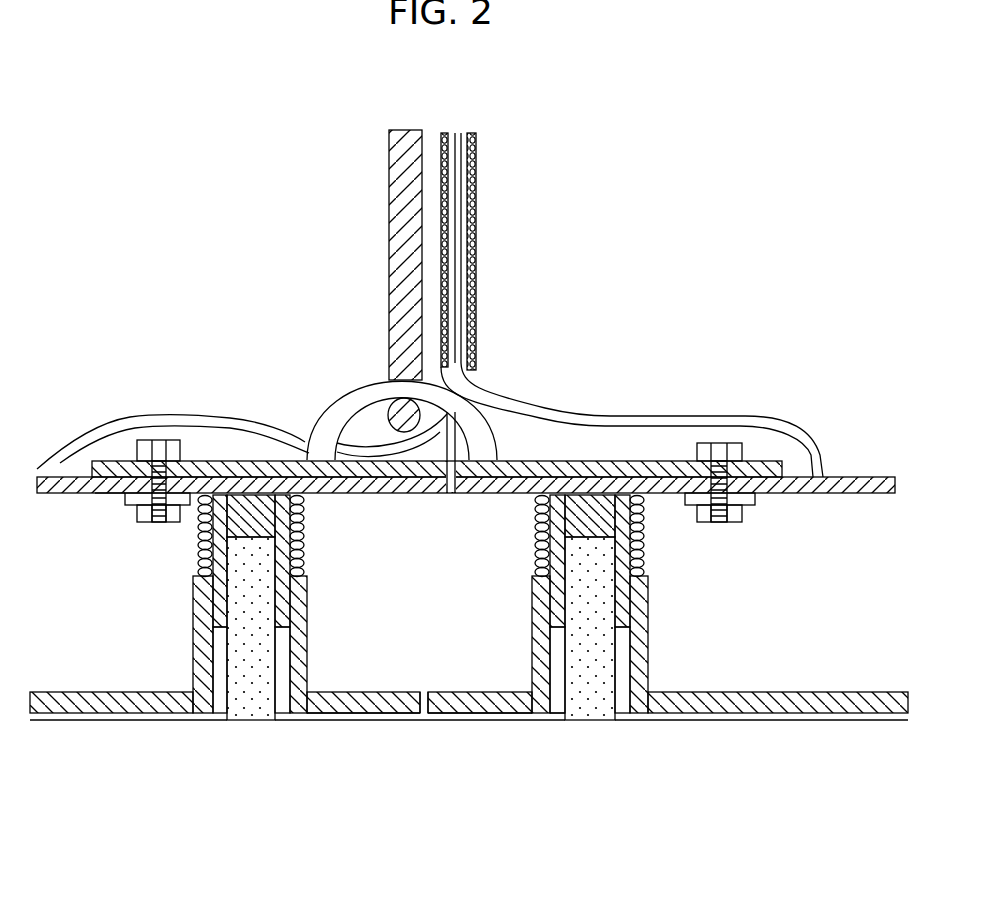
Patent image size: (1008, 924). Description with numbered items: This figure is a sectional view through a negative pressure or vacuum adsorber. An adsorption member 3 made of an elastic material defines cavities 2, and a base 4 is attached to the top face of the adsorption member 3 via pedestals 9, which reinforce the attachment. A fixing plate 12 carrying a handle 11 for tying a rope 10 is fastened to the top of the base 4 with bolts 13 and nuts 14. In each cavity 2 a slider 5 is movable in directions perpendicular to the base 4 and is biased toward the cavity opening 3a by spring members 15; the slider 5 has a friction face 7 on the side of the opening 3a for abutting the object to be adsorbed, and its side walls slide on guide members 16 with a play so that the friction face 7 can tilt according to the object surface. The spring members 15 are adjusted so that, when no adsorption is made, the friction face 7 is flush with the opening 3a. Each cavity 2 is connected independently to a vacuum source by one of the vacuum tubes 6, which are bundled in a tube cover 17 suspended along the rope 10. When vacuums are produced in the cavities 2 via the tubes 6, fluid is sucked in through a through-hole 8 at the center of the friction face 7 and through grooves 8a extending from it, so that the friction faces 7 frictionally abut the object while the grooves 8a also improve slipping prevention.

The cavity 2 is at (493, 680).
The adsorption member 3 is at (235, 705).
The cavity opening 3a is at (555, 718).
The base 4 is at (855, 477).
The slider 5 is at (291, 732).
The vacuum tube 6 is at (203, 423).
The friction face 7 is at (340, 720).
The through-hole 8 is at (425, 712).
The groove 8a is at (393, 715).
The pedestal 9 is at (200, 535).
The rope 10 is at (403, 162).
The handle 11 is at (362, 398).
The fixing plate 12 is at (542, 477).
The bolt 13 is at (108, 495).
The nut 14 is at (143, 445).
The spring member 15 is at (535, 523).
The guide member 16 is at (625, 581).
The tube cover 17 is at (478, 155).